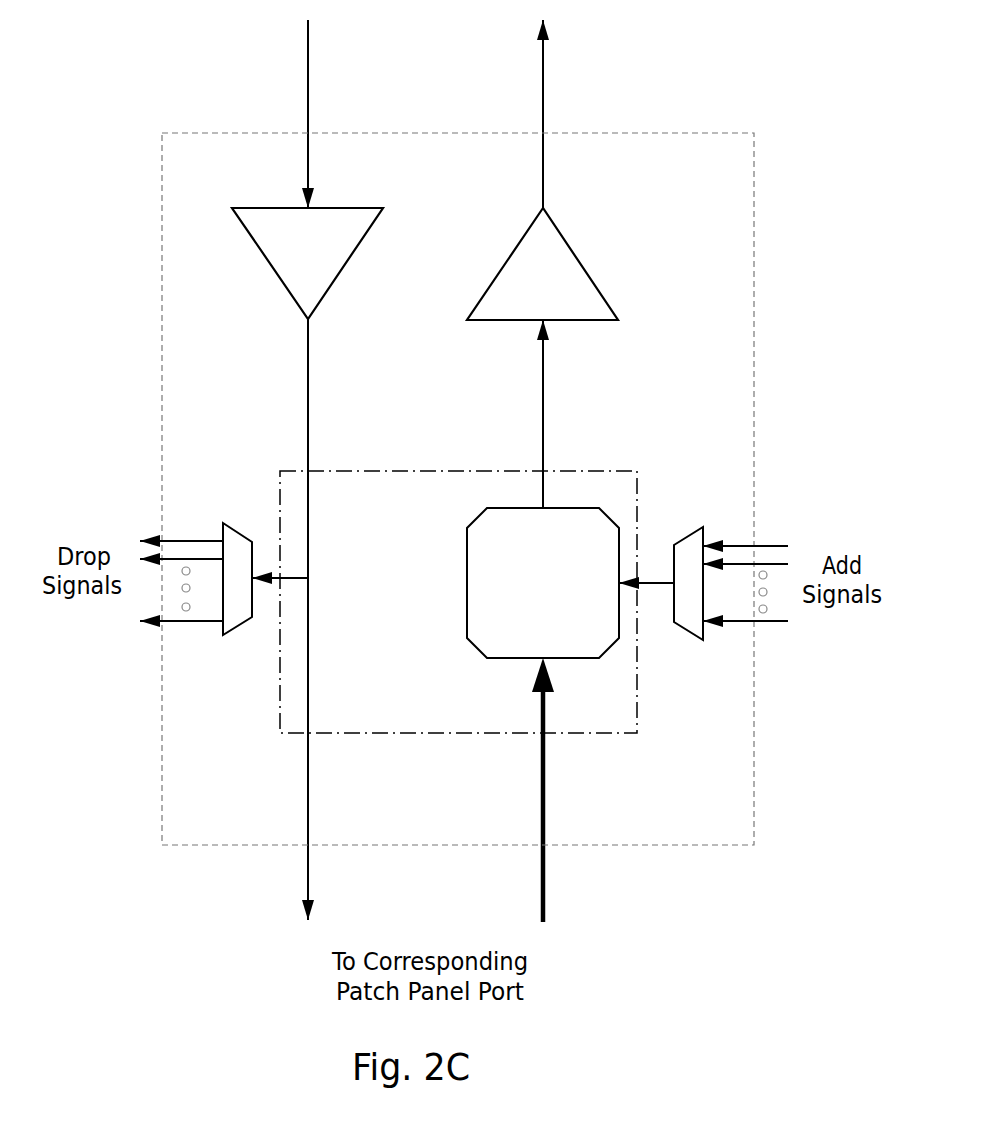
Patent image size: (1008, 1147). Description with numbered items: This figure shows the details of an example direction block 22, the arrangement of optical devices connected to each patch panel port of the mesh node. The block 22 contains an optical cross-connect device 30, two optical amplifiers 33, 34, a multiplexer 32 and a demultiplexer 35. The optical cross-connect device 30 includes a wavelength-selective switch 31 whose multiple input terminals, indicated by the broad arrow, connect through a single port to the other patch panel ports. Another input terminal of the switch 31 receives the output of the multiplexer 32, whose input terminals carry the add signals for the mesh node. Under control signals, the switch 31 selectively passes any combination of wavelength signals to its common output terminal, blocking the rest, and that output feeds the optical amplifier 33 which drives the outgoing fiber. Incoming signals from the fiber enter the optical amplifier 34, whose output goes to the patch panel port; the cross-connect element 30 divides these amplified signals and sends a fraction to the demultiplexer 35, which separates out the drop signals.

The direction block 22 is at (692, 132).
The optical cross-connect device 30 is at (600, 733).
The wavelength-selective switch 31 is at (500, 658).
The multiplexer 32 is at (690, 538).
The optical amplifier 33 is at (573, 247).
The optical amplifier 34 is at (261, 253).
The demultiplexer 35 is at (251, 540).